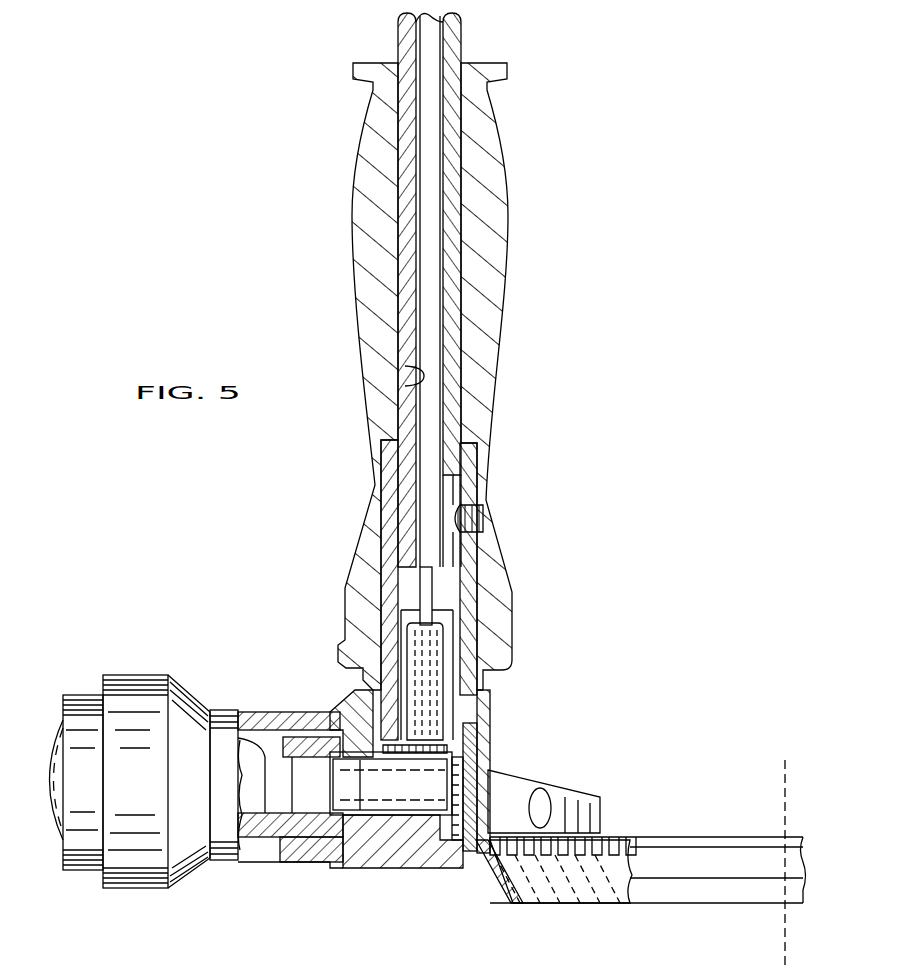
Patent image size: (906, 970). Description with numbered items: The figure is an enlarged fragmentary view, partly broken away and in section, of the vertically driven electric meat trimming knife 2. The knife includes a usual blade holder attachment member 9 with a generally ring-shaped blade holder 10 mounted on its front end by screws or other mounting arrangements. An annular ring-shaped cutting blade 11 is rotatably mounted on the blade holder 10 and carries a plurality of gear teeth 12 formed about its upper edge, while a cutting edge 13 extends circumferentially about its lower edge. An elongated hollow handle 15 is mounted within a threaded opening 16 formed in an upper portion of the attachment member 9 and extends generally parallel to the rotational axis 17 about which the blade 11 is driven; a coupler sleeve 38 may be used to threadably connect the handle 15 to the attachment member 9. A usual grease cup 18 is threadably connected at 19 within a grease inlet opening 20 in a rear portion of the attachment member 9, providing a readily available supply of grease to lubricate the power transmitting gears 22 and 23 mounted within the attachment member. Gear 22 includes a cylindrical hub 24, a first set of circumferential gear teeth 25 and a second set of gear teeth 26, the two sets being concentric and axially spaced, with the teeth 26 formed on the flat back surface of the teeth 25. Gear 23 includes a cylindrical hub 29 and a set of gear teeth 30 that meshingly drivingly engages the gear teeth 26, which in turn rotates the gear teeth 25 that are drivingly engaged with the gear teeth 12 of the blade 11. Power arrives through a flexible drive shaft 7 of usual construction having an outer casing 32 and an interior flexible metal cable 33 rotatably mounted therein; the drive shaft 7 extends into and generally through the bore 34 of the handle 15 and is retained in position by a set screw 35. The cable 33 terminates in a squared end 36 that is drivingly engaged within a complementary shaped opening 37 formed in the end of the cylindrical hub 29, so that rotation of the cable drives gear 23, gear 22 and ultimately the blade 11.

The knife 2 is at (500, 373).
The flexible drive shaft 7 is at (398, 38).
The blade holder attachment member 9 is at (382, 845).
The blade holder 10 is at (560, 797).
The cutting blade 11 is at (583, 880).
The gear teeth 12 is at (635, 852).
The cutting edge 13 is at (505, 905).
The hollow handle 15 is at (380, 268).
The threaded opening 16 is at (482, 706).
The rotational axis 17 is at (788, 790).
The grease cup 18 is at (187, 720).
The threaded connection 19 is at (295, 850).
The grease inlet opening 20 is at (298, 768).
The gear 22 is at (414, 813).
The gear 23 is at (418, 683).
The cylindrical hub 24 is at (378, 783).
The first set of circumferential gear teeth 25 is at (470, 803).
The second set of gear teeth 26 is at (466, 783).
The cylindrical hub 29 is at (450, 662).
The gear teeth 30 is at (398, 760).
The outer casing 32 is at (455, 230).
The flexible metal cable 33 is at (428, 135).
The bore 34 is at (412, 372).
The set screw 35 is at (468, 535).
The squared end 36 is at (430, 585).
The complementary shaped opening 37 is at (358, 600).
The coupler sleeve 38 is at (390, 478).